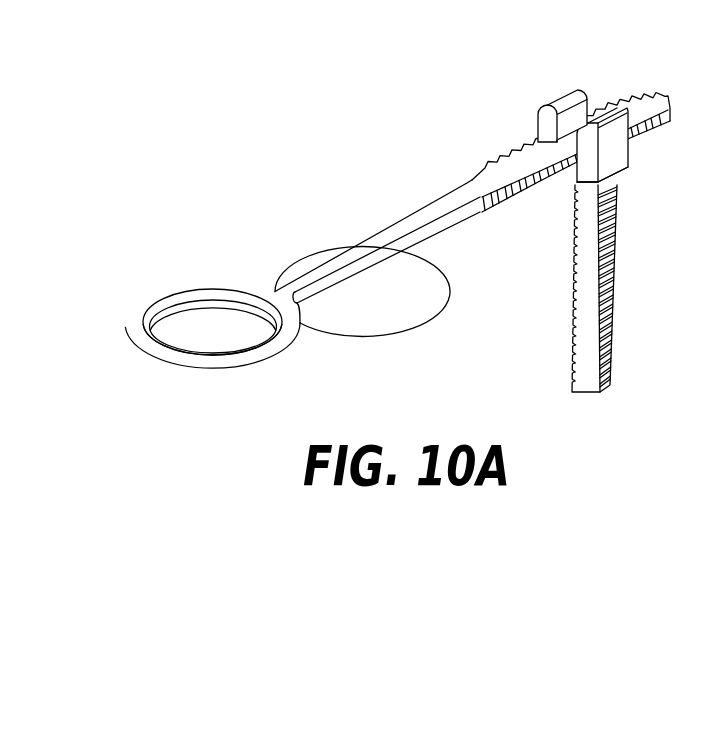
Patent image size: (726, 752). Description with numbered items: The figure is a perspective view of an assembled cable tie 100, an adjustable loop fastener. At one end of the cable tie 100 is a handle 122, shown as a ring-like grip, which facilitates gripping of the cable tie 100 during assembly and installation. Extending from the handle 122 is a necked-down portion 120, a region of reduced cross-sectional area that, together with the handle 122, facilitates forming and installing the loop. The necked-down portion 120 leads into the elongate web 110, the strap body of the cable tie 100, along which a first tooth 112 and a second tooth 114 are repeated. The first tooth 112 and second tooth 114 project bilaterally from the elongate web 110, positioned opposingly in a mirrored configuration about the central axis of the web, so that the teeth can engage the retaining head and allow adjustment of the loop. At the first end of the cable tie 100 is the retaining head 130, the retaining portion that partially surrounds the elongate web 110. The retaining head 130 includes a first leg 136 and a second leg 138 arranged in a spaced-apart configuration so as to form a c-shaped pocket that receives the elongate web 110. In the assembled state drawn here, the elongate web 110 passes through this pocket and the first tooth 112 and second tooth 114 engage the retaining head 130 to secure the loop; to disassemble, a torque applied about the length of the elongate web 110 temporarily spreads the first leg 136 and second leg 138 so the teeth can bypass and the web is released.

The cable tie 100 is at (403, 219).
The elongate web 110 is at (592, 298).
The first tooth 112 is at (522, 153).
The second tooth 114 is at (535, 185).
The necked-down portion 120 is at (377, 238).
The handle 122 is at (160, 297).
The retaining head 130 is at (617, 147).
The first leg 136 is at (622, 176).
The second leg 138 is at (538, 120).